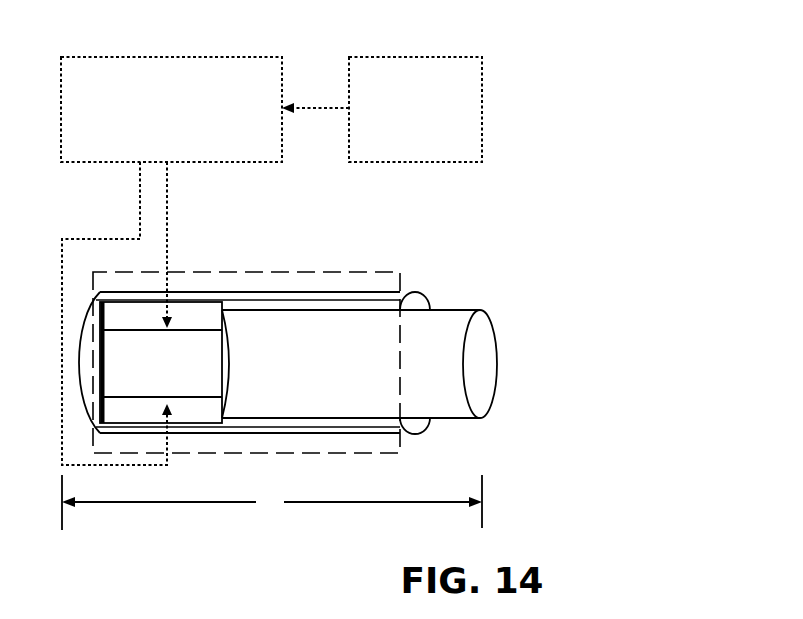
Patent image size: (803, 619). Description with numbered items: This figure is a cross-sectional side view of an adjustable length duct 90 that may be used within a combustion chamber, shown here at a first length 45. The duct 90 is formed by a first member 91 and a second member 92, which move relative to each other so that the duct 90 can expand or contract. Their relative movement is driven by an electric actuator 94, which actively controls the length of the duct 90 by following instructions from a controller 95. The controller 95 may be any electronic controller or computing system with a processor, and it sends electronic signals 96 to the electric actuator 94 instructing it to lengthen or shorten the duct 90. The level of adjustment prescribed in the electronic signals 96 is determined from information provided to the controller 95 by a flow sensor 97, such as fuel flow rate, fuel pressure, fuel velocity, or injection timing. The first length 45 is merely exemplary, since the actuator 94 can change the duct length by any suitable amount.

The adjustable length duct 90 is at (602, 372).
The first member 91 is at (448, 323).
The second member 92 is at (383, 313).
The electric actuator 94 is at (180, 317).
The controller 95 is at (192, 57).
The electronic signals 96 is at (140, 213).
The flow sensor 97 is at (402, 57).
The first length 45 is at (272, 502).